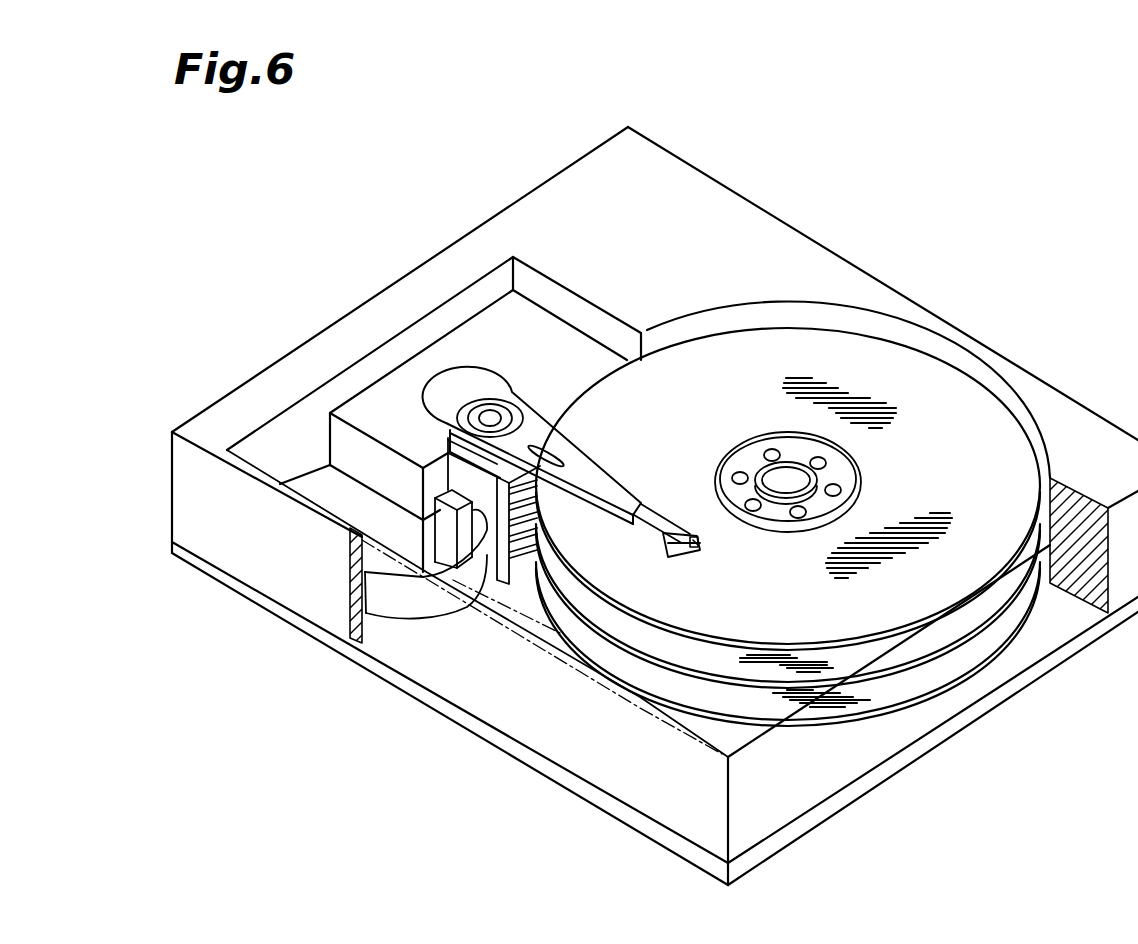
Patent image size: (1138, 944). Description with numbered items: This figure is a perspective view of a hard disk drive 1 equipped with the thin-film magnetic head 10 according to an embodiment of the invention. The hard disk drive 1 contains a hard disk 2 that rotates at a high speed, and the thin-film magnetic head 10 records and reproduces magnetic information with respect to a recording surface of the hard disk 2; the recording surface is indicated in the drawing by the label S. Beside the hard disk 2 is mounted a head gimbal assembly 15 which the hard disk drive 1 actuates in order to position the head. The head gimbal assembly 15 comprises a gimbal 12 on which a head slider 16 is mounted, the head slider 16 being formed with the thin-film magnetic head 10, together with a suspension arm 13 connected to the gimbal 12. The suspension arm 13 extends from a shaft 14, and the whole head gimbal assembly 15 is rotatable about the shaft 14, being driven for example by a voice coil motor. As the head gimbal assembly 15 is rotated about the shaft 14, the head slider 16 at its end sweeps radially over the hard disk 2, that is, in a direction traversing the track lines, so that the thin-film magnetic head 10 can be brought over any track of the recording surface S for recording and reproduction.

The hard disk drive 1 is at (903, 228).
The hard disk 2 is at (913, 388).
The thin-film magnetic head 10 is at (689, 528).
The gimbal 12 is at (643, 527).
The suspension arm 13 is at (585, 485).
The shaft 14 is at (500, 410).
The head gimbal assembly 15 is at (625, 470).
The head slider 16 is at (673, 550).
The recording surface S is at (697, 547).